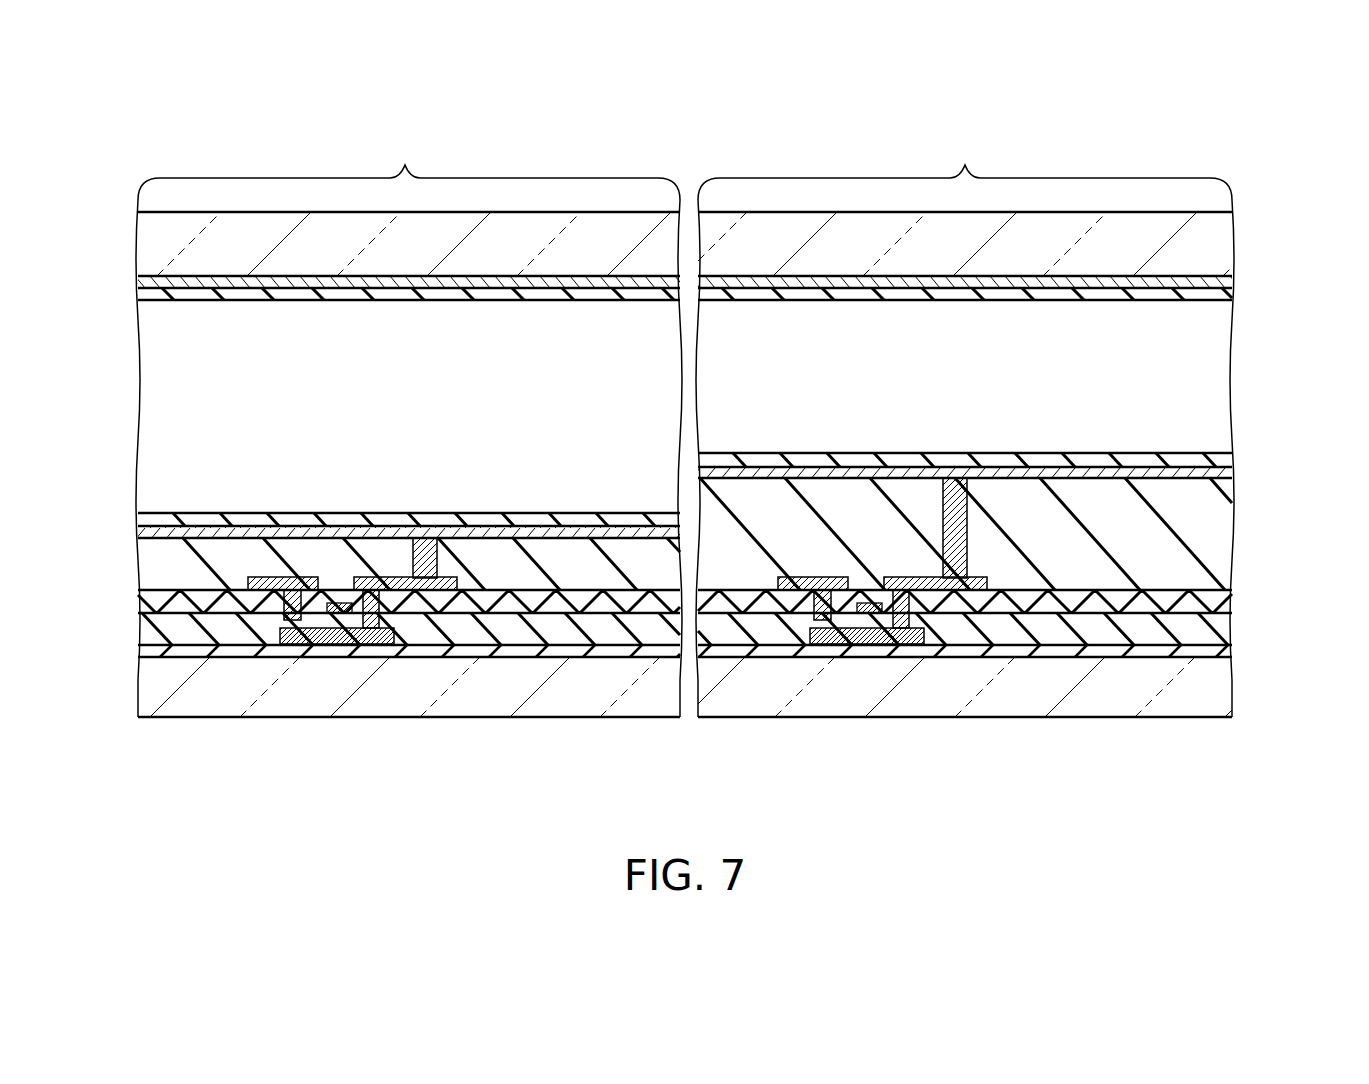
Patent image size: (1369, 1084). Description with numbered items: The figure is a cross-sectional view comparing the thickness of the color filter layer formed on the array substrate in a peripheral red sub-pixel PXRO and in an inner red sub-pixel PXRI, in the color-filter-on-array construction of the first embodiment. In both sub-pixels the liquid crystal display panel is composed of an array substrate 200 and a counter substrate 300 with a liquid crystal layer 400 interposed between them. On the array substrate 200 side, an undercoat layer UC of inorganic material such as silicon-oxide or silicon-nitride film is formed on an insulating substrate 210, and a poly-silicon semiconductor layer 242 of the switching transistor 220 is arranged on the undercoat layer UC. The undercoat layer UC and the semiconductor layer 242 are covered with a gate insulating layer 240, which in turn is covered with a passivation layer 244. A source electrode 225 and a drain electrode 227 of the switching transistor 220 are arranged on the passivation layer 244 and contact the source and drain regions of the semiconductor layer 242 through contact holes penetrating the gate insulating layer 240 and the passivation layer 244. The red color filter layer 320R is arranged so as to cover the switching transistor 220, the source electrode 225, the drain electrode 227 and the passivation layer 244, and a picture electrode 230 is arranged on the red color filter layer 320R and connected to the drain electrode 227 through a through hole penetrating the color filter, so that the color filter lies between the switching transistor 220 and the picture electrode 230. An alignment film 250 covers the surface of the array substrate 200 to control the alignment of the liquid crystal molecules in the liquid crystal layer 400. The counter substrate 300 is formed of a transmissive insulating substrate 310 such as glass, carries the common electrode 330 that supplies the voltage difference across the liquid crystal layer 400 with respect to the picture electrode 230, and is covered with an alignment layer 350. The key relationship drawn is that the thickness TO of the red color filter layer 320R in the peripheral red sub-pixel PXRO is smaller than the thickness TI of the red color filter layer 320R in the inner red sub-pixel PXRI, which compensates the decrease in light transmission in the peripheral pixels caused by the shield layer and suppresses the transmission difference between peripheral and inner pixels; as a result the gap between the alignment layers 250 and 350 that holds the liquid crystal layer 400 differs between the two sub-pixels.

The array substrate 200 is at (1252, 714).
The insulating substrate 210 is at (138, 690).
The switching transistor 220 is at (368, 672).
The source electrode 225 is at (292, 577).
The drain electrode 227 is at (370, 577).
The picture electrode 230 is at (138, 531).
The gate insulating layer 240 is at (138, 631).
The semiconductor layer 242 is at (287, 660).
The passivation layer 244 is at (138, 605).
The alignment film 250 is at (138, 512).
The counter substrate 300 is at (1252, 220).
The insulating substrate 310 is at (138, 246).
The red color filter layer 320R is at (138, 568).
The common electrode 330 is at (138, 276).
The alignment layer 350 is at (138, 298).
The liquid crystal layer 400 is at (138, 401).
The undercoat layer UC is at (138, 653).
The thickness of the red color filter layer in the peripheral red sub-pixel TO is at (530, 582).
The thickness of the red color filter layer in the inner red sub-pixel TI is at (1077, 587).
The peripheral red sub-pixel PXRO is at (409, 165).
The inner red sub-pixel PXRI is at (965, 165).